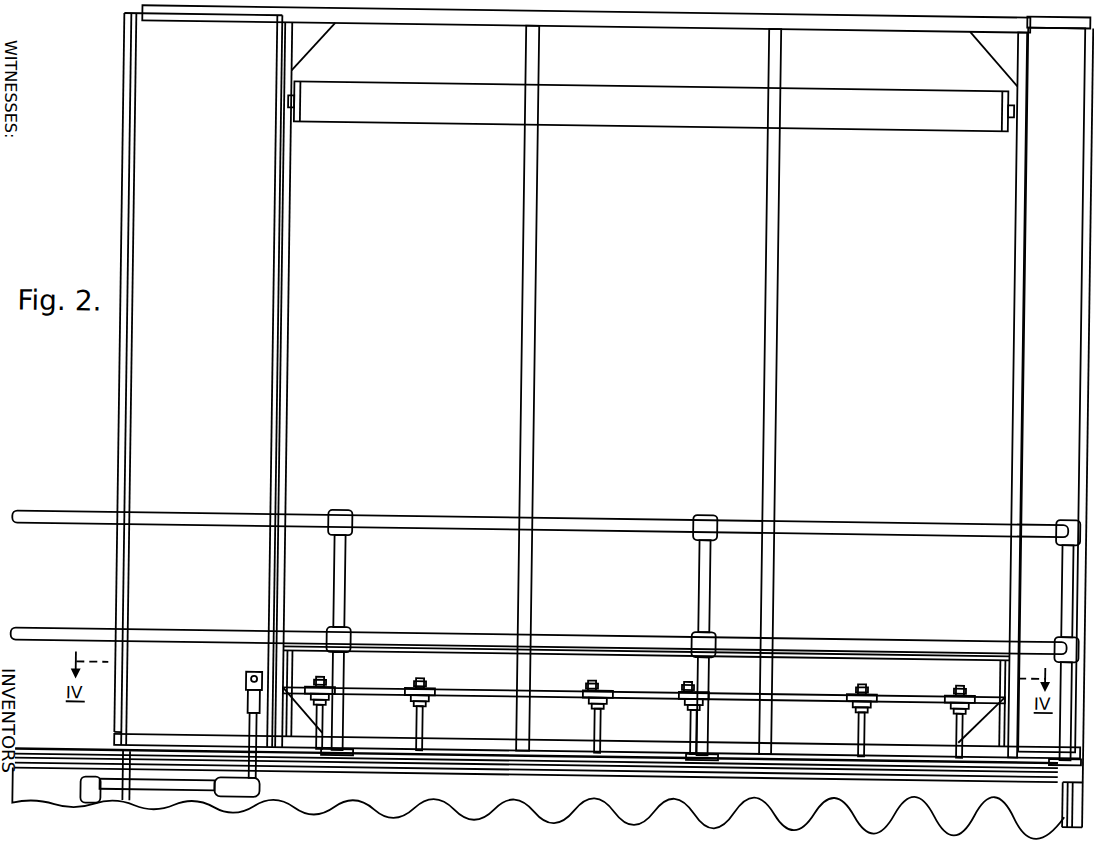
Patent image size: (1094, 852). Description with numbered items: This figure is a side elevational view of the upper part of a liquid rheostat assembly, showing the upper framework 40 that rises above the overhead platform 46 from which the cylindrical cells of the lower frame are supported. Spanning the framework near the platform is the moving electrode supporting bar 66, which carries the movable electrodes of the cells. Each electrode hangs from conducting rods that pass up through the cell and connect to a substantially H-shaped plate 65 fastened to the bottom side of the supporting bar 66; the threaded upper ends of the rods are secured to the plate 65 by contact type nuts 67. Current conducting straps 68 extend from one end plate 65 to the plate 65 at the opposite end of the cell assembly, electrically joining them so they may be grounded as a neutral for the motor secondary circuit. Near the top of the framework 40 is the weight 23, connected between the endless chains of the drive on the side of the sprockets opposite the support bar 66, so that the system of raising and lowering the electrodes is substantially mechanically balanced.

The weight 23 is at (448, 124).
The upper framework 40 is at (96, 433).
The overhead platform 46 is at (538, 794).
The plate 65 is at (666, 698).
The moving electrode supporting bar 66 is at (423, 660).
The contact type nuts 67 is at (689, 688).
The current conducting straps 68 is at (494, 695).